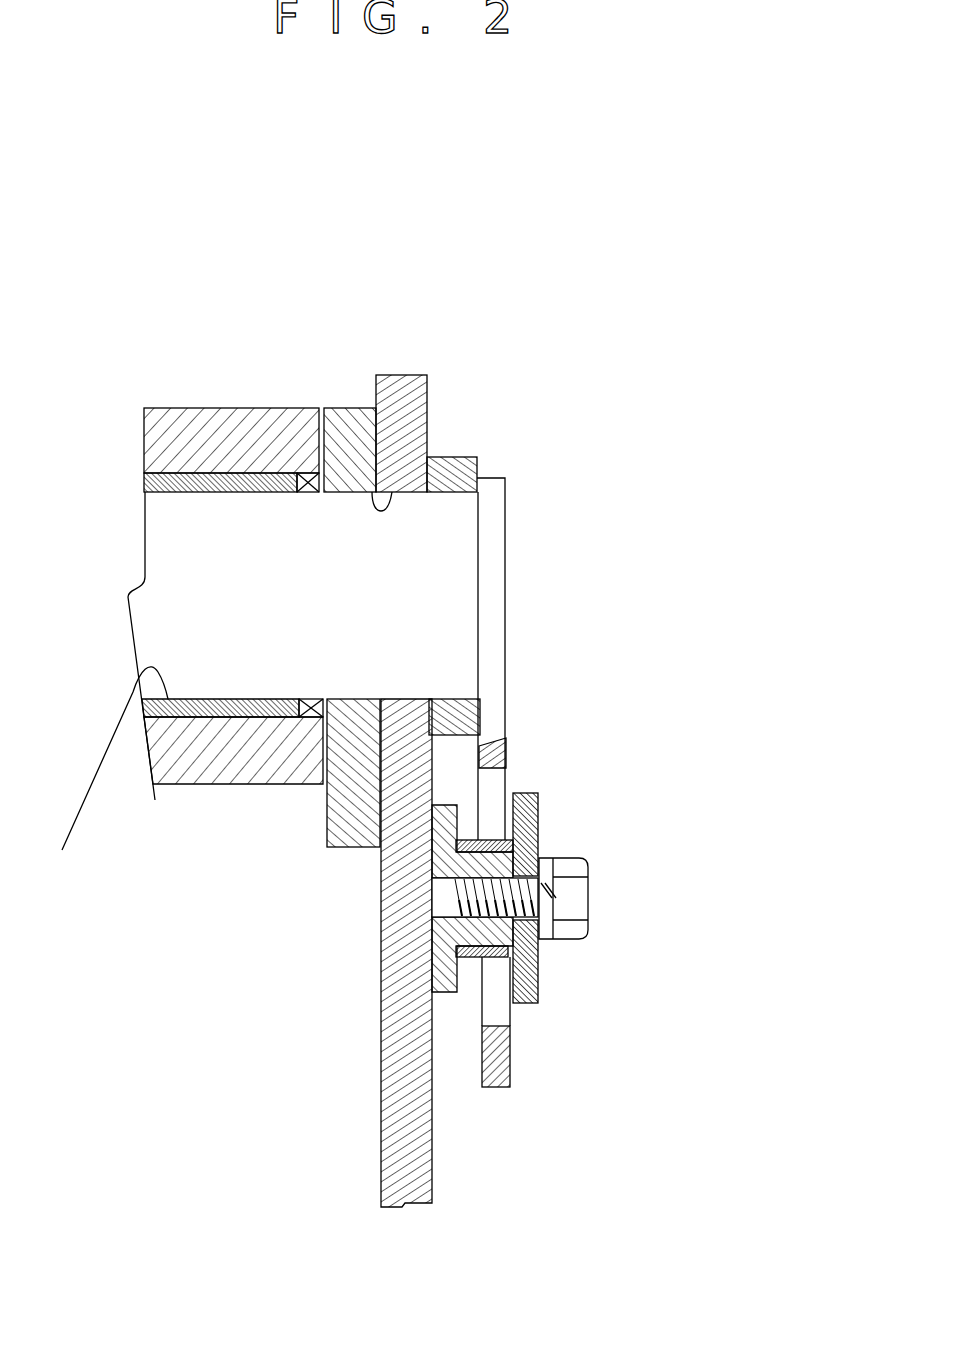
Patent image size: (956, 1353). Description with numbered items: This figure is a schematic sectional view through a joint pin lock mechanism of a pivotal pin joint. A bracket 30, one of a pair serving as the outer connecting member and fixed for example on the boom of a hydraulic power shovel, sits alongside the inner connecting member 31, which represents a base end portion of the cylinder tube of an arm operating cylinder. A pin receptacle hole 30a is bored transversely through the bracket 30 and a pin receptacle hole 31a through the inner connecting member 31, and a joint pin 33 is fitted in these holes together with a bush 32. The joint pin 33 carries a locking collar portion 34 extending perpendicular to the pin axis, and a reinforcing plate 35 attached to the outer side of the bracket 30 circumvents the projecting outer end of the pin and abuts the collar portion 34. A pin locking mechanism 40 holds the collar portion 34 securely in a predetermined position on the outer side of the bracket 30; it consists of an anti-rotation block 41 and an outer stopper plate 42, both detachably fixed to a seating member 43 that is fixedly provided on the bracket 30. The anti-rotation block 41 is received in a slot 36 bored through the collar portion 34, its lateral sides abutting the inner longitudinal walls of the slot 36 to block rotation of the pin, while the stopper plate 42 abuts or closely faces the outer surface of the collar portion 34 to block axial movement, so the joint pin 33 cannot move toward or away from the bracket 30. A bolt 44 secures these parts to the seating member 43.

The bracket 30 is at (403, 395).
The pin receptacle hole 30a is at (372, 492).
The inner connecting member 31 is at (246, 435).
The pin receptacle hole 31a is at (102, 776).
The bush 32 is at (200, 478).
The joint pin 33 is at (458, 598).
The locking collar portion 34 is at (498, 625).
The reinforcing plate 35 is at (455, 470).
The slot 36 is at (497, 788).
The pin locking mechanism 40 is at (493, 881).
The anti-rotation block 41 is at (475, 958).
The outer stopper plate 42 is at (530, 972).
The seating member 43 is at (437, 960).
The bolt 44 is at (518, 888).